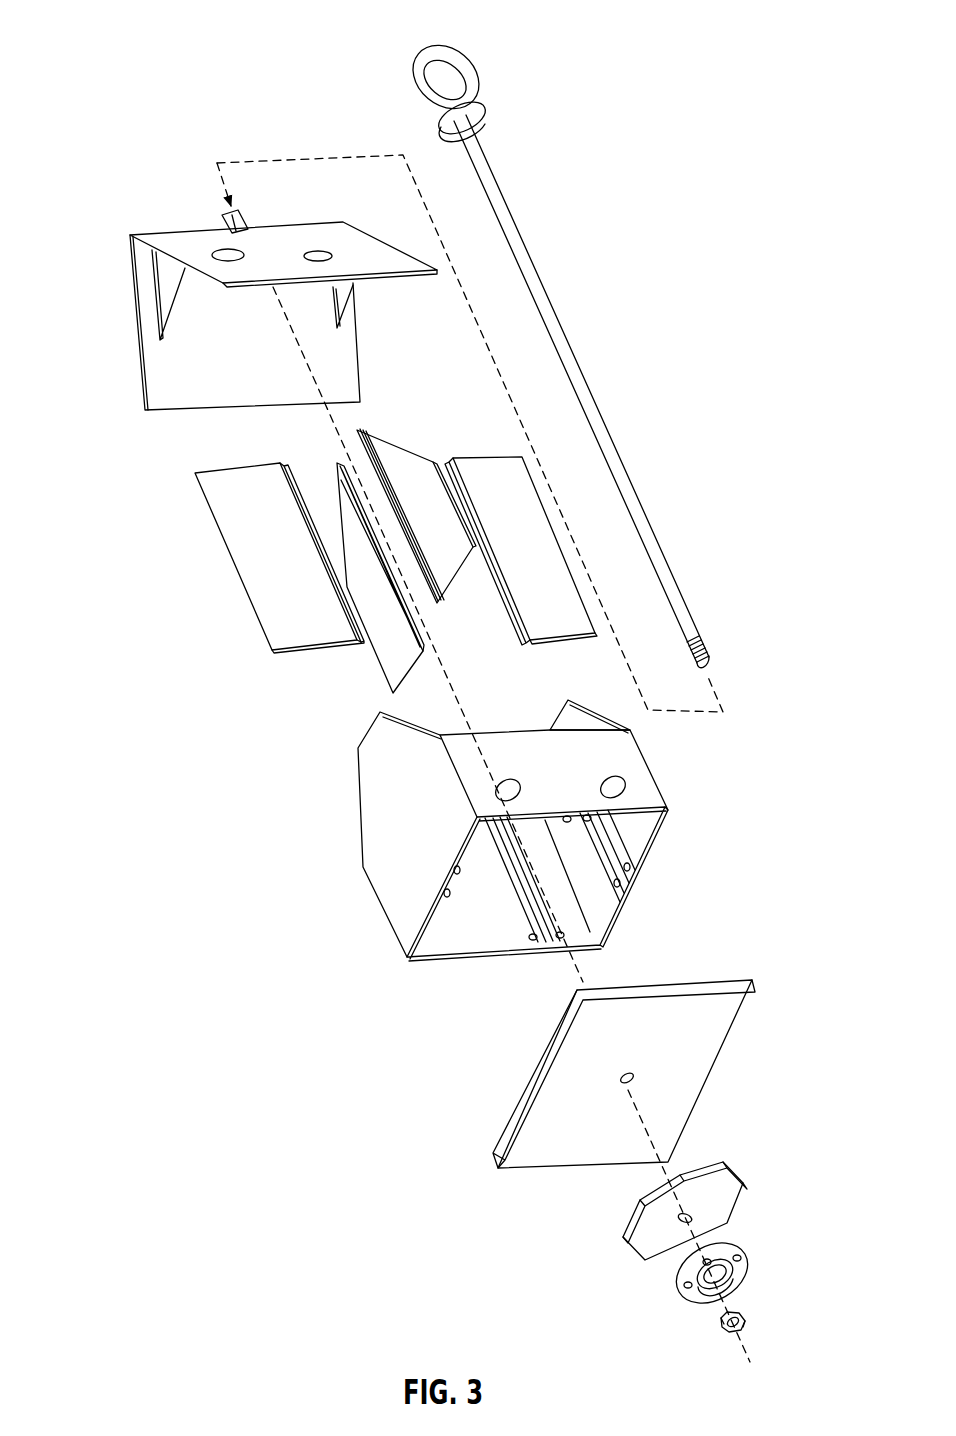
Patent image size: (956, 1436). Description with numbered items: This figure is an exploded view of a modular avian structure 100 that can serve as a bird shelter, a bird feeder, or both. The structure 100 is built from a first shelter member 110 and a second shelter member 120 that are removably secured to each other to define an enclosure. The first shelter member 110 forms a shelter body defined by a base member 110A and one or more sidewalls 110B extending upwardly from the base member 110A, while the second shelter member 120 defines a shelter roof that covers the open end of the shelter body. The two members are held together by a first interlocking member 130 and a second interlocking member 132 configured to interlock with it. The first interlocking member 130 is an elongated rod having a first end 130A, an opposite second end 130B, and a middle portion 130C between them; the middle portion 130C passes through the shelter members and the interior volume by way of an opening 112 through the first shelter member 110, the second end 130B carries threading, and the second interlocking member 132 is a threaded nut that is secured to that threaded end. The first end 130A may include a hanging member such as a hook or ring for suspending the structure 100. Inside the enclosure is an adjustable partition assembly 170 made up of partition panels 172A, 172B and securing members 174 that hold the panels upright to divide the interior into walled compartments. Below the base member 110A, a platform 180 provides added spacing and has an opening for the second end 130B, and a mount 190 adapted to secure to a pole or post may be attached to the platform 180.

The modular avian structure 100 is at (126, 60).
The first shelter member 110 is at (340, 916).
The base member 110A is at (723, 1055).
The sidewalls 110B is at (653, 770).
The opening 112 is at (623, 1092).
The second shelter member 120 is at (133, 323).
The first interlocking member 130 is at (612, 192).
The first end 130A is at (477, 80).
The second end 130B is at (707, 653).
The middle portion 130C is at (560, 325).
The second interlocking member 132 is at (747, 1317).
The adjustable partition assembly 170 is at (128, 543).
The partition panels 172A is at (275, 615).
The partition panels 172B is at (400, 452).
The securing members 174 is at (587, 817).
The platform 180 is at (743, 1192).
The mount 190 is at (747, 1260).